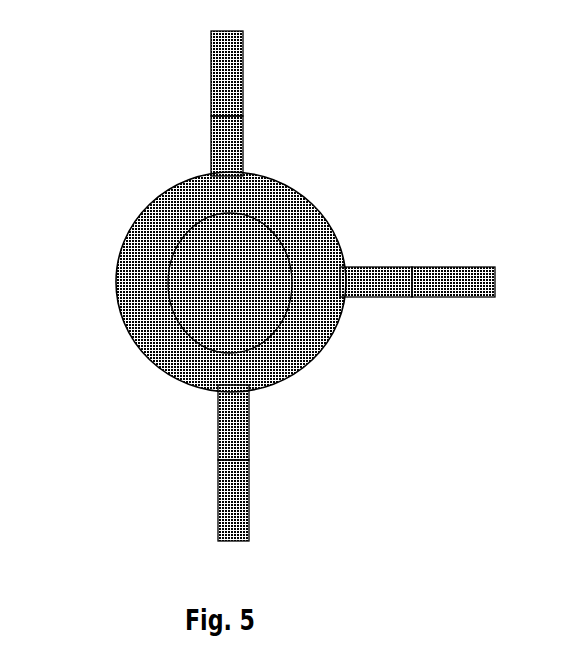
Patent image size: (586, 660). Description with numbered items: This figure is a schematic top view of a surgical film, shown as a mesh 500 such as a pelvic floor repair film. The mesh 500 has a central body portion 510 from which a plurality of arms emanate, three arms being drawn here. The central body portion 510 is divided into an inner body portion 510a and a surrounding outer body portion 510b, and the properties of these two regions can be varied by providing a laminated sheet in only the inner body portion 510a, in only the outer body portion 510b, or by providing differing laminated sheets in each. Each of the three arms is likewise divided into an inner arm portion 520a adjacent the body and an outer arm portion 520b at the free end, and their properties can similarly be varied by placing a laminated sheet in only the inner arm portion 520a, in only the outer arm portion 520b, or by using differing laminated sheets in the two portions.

The mesh 500 is at (268, 286).
The body portion 510 is at (193, 262).
The inner body portion 510a is at (208, 314).
The outer body portion 510b is at (136, 287).
The inner arm portion 520a is at (233, 143).
The outer arm portion 520b is at (230, 80).